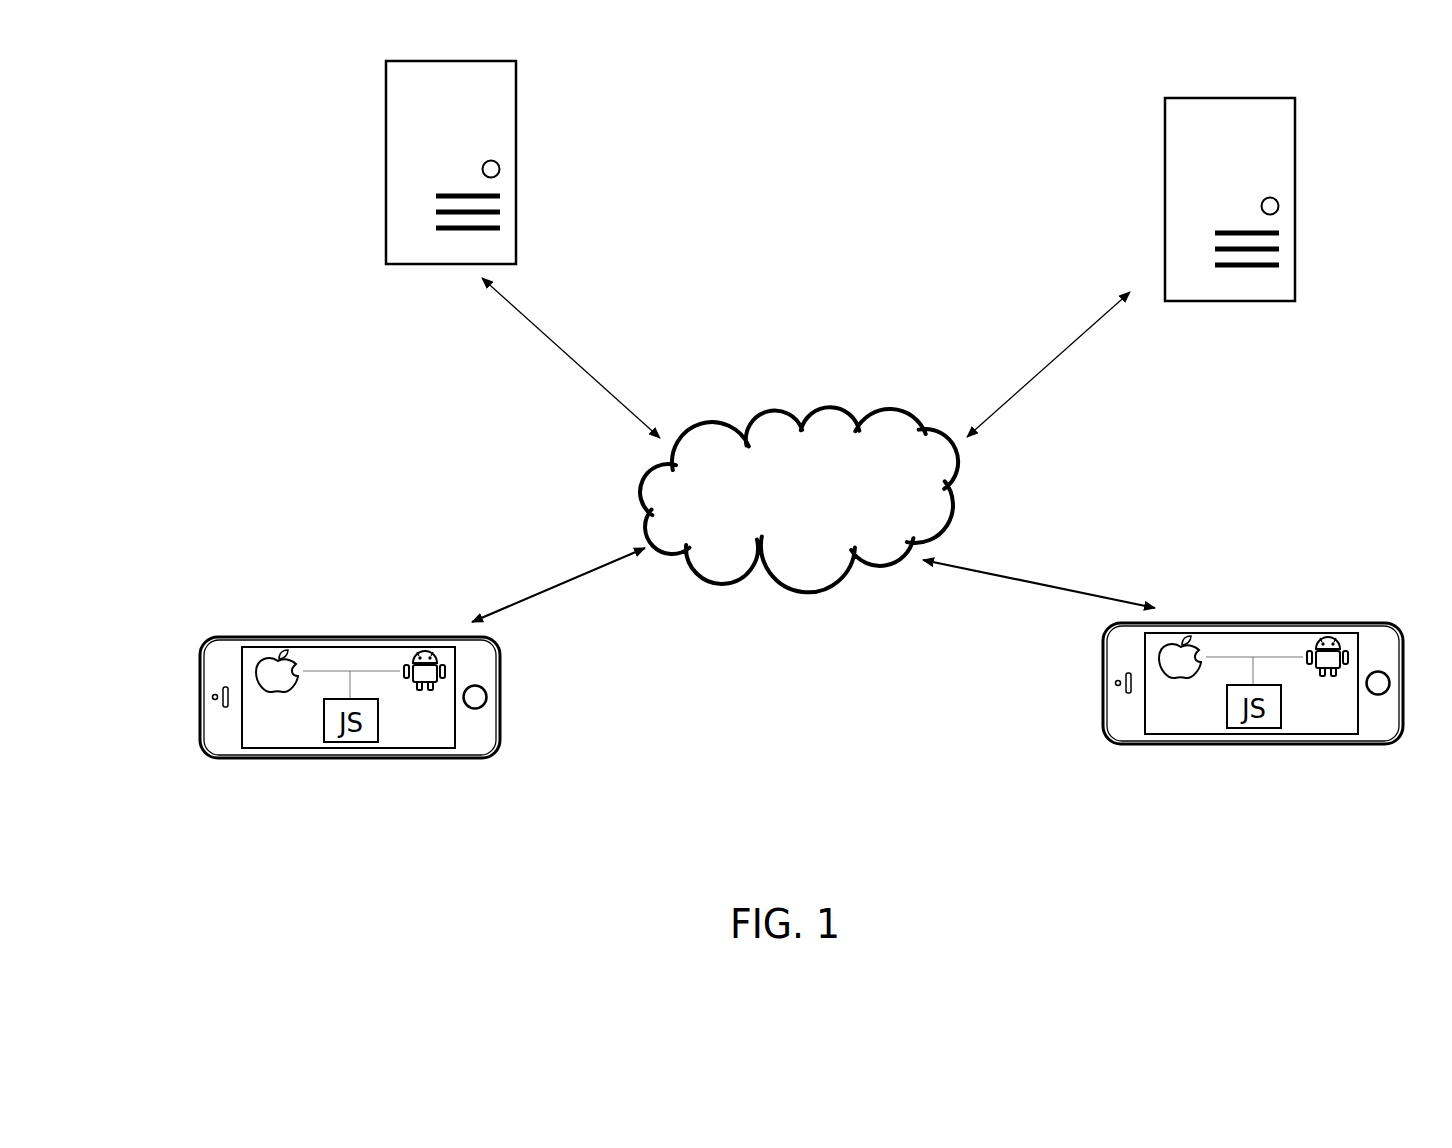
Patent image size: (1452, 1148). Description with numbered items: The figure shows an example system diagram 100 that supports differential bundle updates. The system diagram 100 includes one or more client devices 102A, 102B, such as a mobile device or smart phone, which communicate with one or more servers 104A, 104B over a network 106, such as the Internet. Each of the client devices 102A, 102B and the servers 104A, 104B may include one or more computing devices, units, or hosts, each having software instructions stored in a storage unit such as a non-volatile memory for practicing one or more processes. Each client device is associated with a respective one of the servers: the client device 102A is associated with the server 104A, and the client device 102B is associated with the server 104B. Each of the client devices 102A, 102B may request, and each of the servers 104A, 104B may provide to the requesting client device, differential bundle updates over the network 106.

The system diagram 100 is at (205, 86).
The client device 102A is at (357, 637).
The client device 102B is at (1288, 623).
The server 104A is at (386, 148).
The server 104B is at (1185, 163).
The network 106 is at (765, 509).